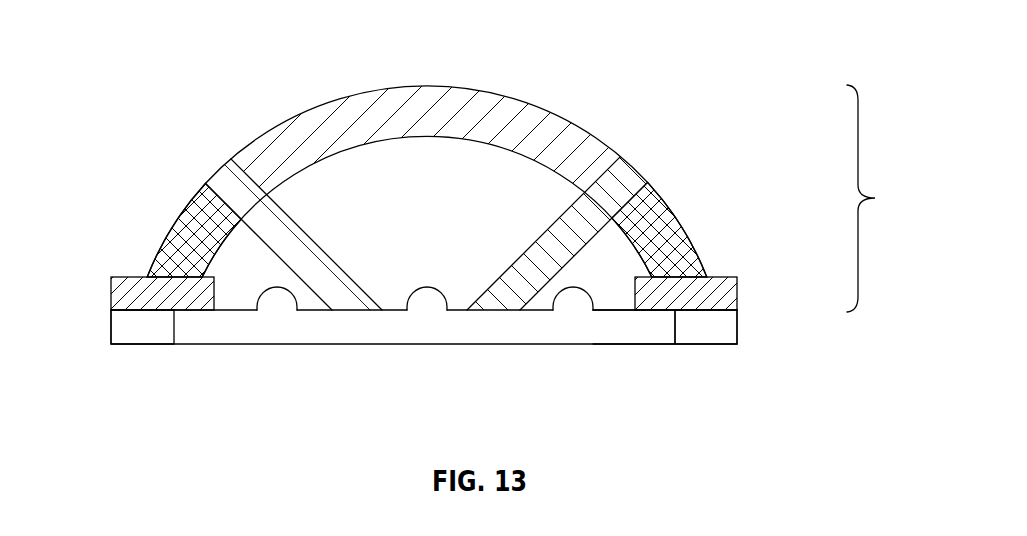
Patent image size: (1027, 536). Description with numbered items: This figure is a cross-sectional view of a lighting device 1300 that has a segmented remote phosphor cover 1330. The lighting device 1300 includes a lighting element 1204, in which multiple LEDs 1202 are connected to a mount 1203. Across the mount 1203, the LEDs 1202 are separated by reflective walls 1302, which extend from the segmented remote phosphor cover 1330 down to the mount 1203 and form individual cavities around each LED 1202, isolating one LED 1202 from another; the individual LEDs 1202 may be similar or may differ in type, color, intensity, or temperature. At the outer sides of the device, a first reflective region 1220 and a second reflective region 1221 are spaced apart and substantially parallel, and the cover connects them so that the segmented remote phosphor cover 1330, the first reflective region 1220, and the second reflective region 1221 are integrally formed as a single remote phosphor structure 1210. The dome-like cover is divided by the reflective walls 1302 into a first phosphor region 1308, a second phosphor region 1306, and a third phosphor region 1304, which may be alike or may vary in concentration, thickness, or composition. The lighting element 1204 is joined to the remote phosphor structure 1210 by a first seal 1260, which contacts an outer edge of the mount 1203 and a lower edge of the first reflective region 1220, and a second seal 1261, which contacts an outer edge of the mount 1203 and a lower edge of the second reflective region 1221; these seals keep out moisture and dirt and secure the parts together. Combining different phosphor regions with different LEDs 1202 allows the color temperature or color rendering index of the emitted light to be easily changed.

The lighting device 1300 is at (183, 83).
The second phosphor region 1306 is at (523, 97).
The segmented remote phosphor cover 1330 is at (297, 112).
The first phosphor region 1308 is at (183, 213).
The third phosphor region 1304 is at (663, 218).
The reflective walls 1302 is at (297, 243).
The first reflective region 1220 is at (120, 302).
The second reflective region 1221 is at (742, 297).
The lighting element 1204 is at (228, 330).
The first seal 1260 is at (135, 328).
The second seal 1261 is at (710, 328).
The mount 1203 is at (637, 328).
The LEDs 1202 is at (274, 302).
The remote phosphor structure 1210 is at (892, 198).